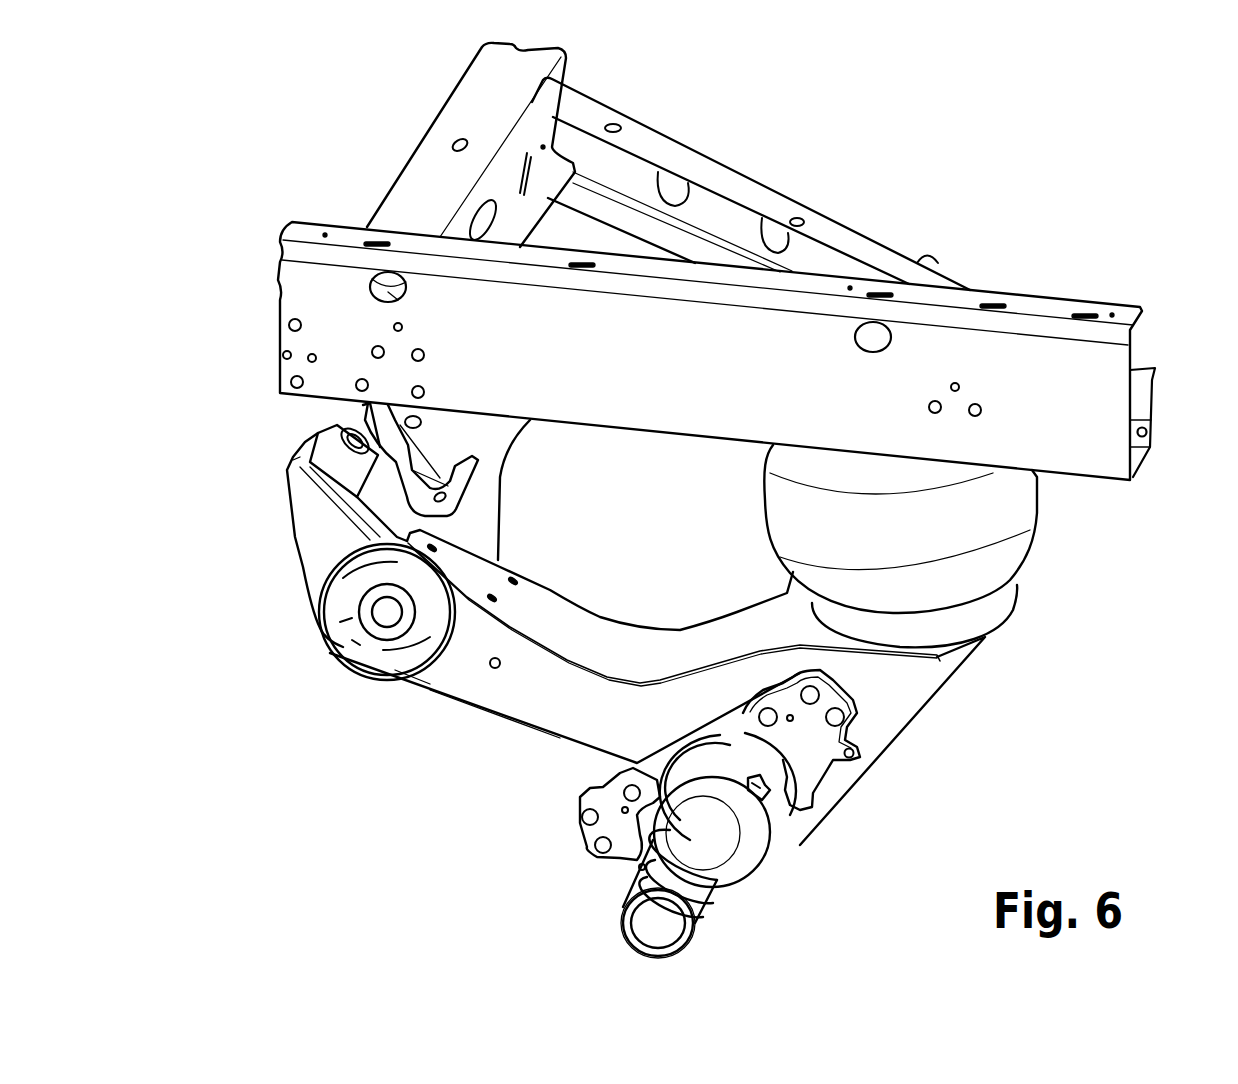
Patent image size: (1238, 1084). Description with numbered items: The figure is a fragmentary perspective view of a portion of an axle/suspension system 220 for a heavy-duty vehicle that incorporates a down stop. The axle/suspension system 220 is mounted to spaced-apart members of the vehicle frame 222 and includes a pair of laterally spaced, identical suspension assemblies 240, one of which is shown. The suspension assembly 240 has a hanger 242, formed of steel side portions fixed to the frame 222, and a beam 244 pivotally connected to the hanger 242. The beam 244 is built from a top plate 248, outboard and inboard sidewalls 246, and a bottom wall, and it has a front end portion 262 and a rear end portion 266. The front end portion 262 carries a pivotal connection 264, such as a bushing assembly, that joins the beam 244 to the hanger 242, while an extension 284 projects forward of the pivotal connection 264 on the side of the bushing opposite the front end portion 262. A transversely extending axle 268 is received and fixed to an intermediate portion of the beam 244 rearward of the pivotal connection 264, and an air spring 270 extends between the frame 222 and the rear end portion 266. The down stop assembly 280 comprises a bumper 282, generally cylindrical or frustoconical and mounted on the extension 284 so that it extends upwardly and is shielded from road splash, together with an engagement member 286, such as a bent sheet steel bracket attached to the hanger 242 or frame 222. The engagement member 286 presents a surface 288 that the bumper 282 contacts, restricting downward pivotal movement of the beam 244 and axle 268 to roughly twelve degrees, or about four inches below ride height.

The axle/suspension system 220 is at (920, 180).
The frame 222 is at (302, 229).
The suspension assembly 240 is at (883, 775).
The hanger 242 is at (500, 452).
The beam 244 is at (647, 716).
The sidewalls 246 is at (498, 693).
The top plate 248 is at (550, 620).
The front end portion 262 is at (420, 675).
The pivotal connection 264 is at (353, 633).
The rear end portion 266 is at (832, 780).
The axle 268 is at (773, 822).
The air spring 270 is at (940, 532).
The down stop assembly 280 is at (278, 446).
The bumper 282 is at (328, 465).
The extension 284 is at (310, 543).
The engagement member 286 is at (363, 409).
The surface 288 is at (377, 460).